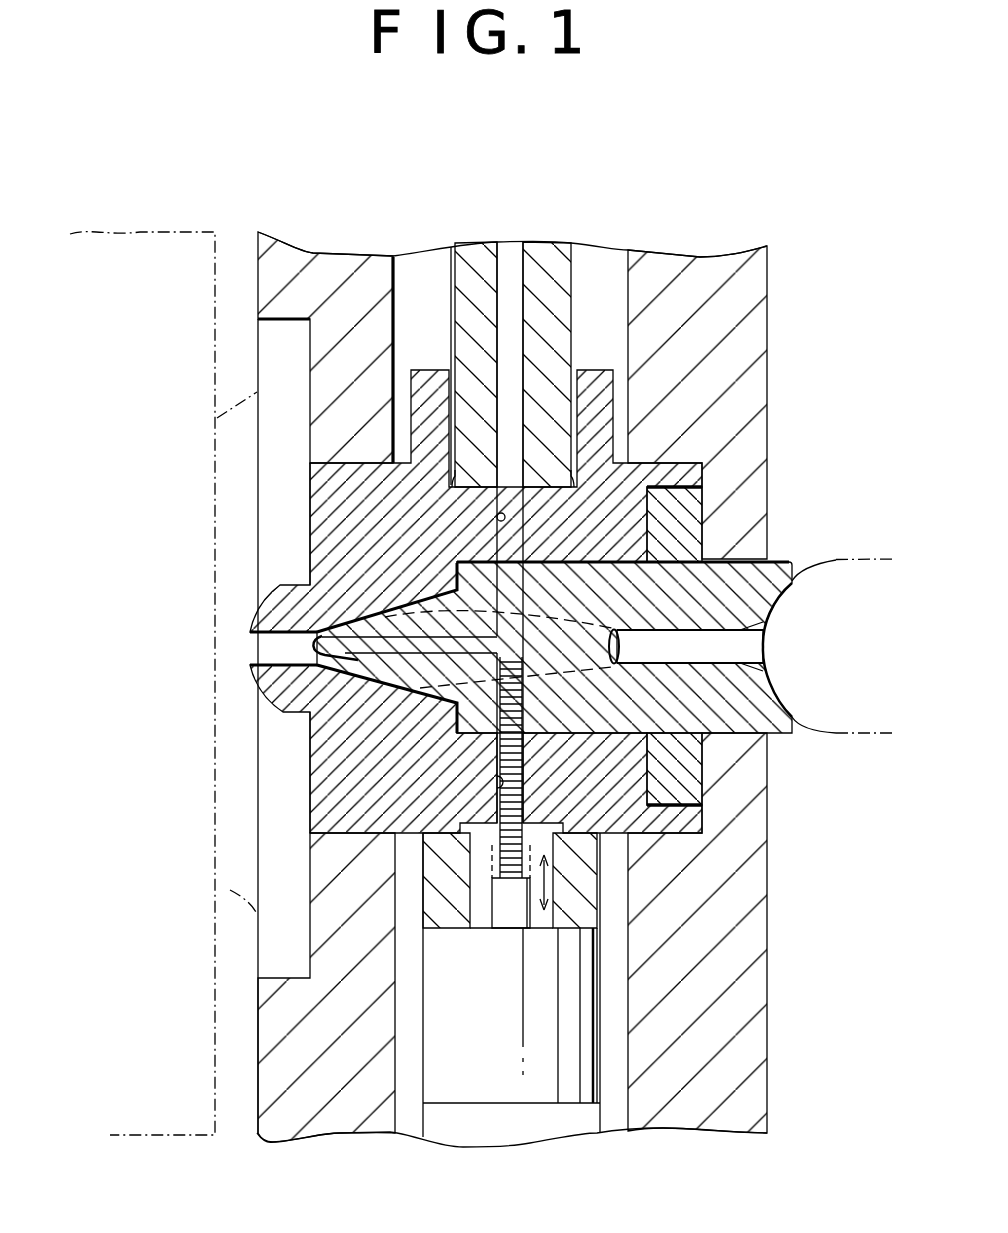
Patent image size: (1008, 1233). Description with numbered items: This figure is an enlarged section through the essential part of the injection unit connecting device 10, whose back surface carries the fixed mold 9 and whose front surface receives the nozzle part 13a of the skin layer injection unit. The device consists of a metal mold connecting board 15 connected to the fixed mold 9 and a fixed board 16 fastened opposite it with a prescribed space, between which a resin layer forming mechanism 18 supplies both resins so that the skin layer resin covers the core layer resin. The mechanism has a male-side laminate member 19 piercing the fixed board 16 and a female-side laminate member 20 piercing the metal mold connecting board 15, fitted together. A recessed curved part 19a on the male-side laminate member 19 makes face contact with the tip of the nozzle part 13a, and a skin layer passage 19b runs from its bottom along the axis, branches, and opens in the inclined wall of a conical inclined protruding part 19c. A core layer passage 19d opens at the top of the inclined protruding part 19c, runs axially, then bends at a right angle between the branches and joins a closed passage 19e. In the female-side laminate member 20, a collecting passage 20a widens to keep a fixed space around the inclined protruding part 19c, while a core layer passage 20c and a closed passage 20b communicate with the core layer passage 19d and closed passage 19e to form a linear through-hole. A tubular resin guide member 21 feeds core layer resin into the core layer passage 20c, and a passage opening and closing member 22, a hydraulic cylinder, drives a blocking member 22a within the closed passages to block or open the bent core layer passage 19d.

The fixed mold 9 is at (136, 250).
The injection unit connecting device 10 is at (773, 241).
The nozzle part 13a is at (878, 558).
The metal mold connecting board 15 is at (358, 275).
The fixed board 16 is at (745, 333).
The resin layer forming mechanism 18 is at (685, 472).
The male-side laminate member 19 is at (770, 572).
The recessed curved part 19a is at (773, 683).
The skin layer passage 19b is at (765, 645).
The inclined protruding part 19c is at (387, 612).
The core layer passage 19d is at (315, 647).
The closed passage 19e is at (450, 703).
The female-side laminate member 20 is at (305, 768).
The collecting passage 20a is at (250, 636).
The closed passage 20b is at (495, 790).
The core layer passage 20c is at (497, 515).
The resin guide member 21 is at (548, 258).
The passage opening and closing member 22 is at (543, 1103).
The blocking member 22a is at (530, 778).